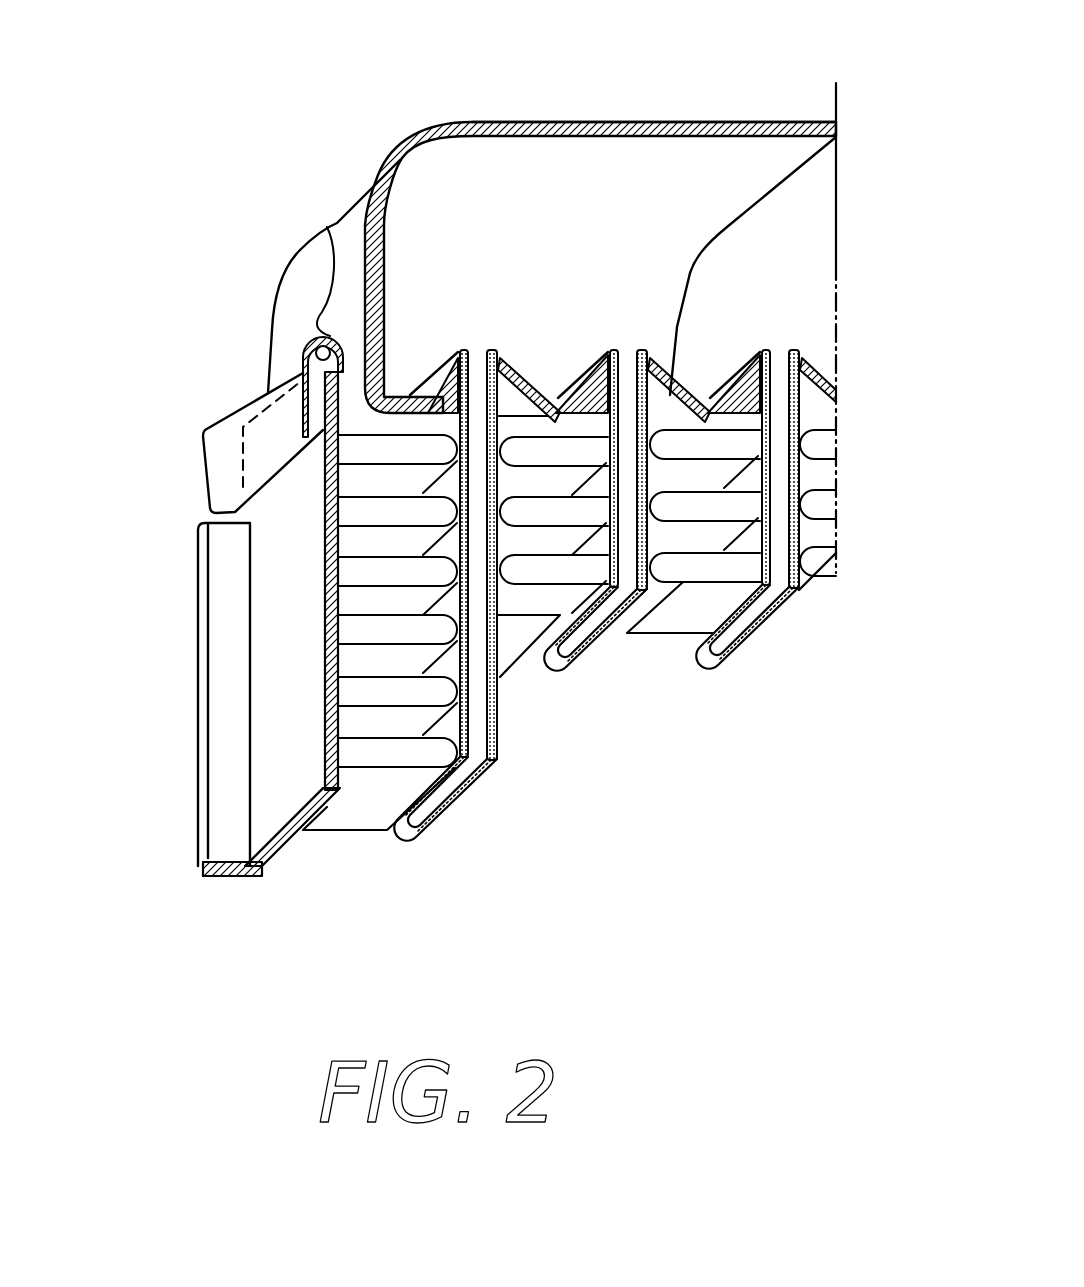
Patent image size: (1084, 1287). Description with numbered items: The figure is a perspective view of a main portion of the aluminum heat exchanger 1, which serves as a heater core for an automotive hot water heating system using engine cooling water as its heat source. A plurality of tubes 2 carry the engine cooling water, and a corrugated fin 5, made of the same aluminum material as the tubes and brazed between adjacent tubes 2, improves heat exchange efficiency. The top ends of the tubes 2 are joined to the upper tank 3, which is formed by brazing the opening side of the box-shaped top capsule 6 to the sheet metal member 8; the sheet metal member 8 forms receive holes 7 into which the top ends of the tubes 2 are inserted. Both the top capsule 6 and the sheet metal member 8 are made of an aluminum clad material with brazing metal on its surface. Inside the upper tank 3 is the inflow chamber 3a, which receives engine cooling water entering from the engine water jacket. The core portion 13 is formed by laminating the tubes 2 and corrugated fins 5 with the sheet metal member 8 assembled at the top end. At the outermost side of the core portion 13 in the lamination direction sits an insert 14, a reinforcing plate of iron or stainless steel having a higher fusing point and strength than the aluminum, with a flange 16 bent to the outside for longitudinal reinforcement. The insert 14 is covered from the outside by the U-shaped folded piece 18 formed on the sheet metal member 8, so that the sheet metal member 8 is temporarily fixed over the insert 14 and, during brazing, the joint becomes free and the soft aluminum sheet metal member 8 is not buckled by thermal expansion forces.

The aluminum heat exchanger 1 is at (238, 248).
The tube 2 is at (472, 613).
The upper tank 3 is at (584, 212).
The inflow chamber 3a is at (648, 192).
The corrugated fin 5 is at (325, 483).
The top capsule 6 is at (494, 122).
The receive hole 7 is at (498, 388).
The sheet metal member 8 is at (710, 432).
The core portion 13 is at (197, 407).
The insert 14 is at (224, 699).
The flange 16 is at (200, 690).
The folded piece 18 is at (322, 230).